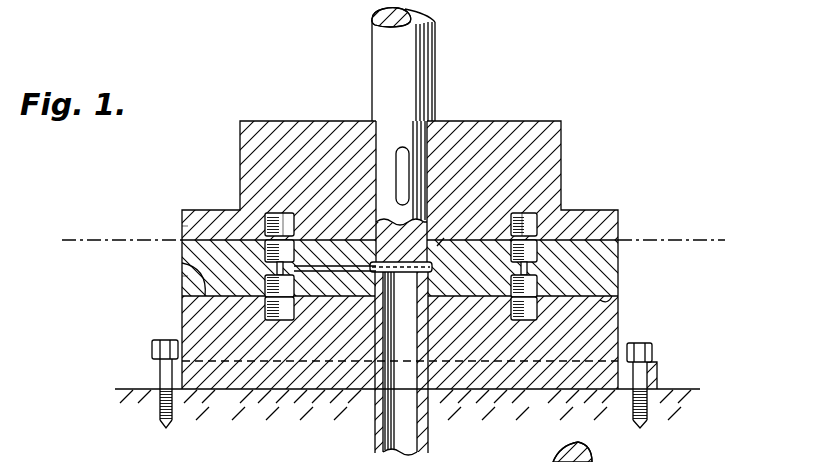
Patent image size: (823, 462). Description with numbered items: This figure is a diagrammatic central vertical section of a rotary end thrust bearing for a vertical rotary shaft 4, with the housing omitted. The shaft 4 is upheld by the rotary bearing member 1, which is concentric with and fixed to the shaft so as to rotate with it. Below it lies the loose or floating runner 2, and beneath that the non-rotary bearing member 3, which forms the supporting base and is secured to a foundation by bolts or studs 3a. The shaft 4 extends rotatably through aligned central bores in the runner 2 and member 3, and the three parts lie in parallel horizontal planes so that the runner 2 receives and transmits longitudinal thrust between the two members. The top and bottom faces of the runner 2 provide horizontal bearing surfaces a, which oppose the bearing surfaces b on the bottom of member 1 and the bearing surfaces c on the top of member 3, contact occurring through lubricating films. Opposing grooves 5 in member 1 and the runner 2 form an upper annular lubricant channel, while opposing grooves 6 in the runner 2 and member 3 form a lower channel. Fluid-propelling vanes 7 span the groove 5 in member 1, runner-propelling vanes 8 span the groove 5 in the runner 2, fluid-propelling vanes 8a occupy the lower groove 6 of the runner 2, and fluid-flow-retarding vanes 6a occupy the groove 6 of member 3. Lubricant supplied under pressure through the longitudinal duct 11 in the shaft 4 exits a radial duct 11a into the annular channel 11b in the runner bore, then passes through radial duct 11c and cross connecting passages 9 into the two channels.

The rotary bearing member 1 is at (562, 204).
The loose or floating rotary bearing member (runner) 2 is at (112, 232).
The non-rotary bearing member 3 is at (238, 356).
The bolts or studs 3a is at (152, 350).
The vertical rotary shaft 4 is at (436, 86).
The grooves 5 is at (283, 212).
The grooves 6 is at (268, 302).
The fluid-flow-retarding vanes 6a is at (294, 306).
The fluid-propelling vanes 7 is at (294, 222).
The runner-propelling vanes 8 is at (294, 251).
The fluid-propelling vanes 8a is at (294, 282).
The cross connecting ducts or passages 9 is at (258, 270).
The passage or duct 11 is at (383, 326).
The radial duct 11a is at (417, 280).
The annular channel 11b is at (444, 238).
The radial duct 11c is at (351, 237).
The horizontal bearing surfaces a is at (605, 224).
The horizontal bearing surfaces b is at (186, 234).
The horizontal bearing surfaces c is at (188, 274).